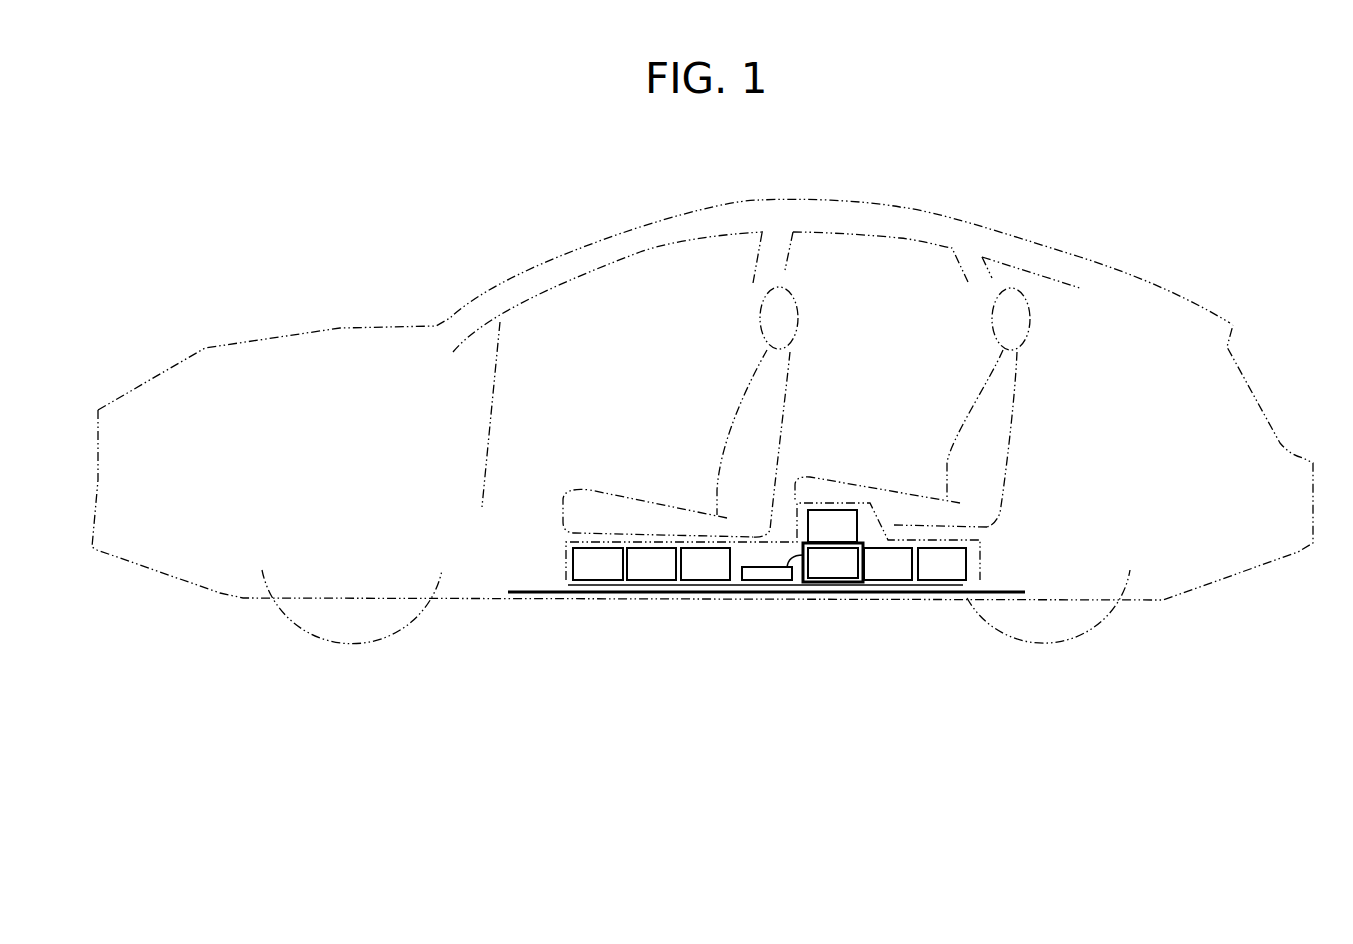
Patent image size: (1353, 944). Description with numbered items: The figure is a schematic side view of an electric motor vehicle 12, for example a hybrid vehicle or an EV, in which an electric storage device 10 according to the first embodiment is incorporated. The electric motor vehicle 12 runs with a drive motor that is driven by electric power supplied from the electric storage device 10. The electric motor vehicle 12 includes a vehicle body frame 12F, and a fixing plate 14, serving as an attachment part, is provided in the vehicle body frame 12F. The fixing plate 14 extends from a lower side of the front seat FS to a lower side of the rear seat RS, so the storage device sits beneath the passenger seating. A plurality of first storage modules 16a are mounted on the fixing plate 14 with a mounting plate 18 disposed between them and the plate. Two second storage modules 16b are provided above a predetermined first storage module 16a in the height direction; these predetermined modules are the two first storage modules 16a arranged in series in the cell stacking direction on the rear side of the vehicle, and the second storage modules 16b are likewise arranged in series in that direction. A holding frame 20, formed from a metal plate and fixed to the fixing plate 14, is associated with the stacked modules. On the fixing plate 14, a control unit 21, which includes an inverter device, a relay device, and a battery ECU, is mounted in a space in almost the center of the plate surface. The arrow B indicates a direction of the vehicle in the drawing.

The electric storage device 10 is at (845, 487).
The electric motor vehicle 12 is at (378, 255).
The vehicle body frame 12F is at (365, 599).
The fixing plate 14 is at (532, 594).
The first storage module 16a is at (595, 578).
The second storage module 16b is at (837, 541).
The mounting plate 18 is at (637, 586).
The holding frame 20 is at (803, 558).
The control unit 21 is at (763, 574).
The front seat FS is at (777, 290).
The rear seat RS is at (1013, 293).
The vehicle width/length direction B is at (700, 728).